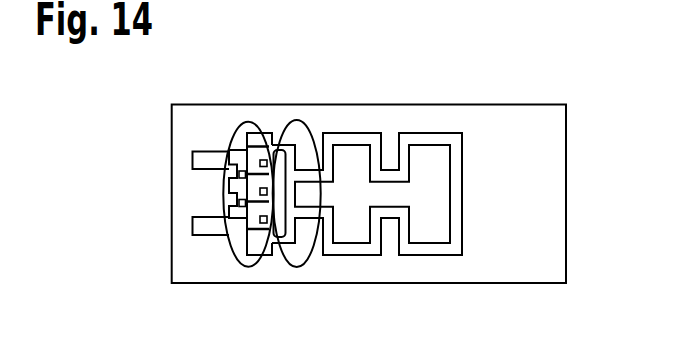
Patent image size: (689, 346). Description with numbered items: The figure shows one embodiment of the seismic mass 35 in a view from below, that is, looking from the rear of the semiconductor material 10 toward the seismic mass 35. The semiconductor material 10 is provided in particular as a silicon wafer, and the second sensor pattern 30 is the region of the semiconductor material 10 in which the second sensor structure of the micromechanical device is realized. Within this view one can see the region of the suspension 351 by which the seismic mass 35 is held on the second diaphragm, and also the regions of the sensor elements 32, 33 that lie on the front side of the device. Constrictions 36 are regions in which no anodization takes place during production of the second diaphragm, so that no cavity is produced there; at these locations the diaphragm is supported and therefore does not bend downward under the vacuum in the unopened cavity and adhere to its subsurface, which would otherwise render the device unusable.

The semiconductor material 10 is at (518, 127).
The second sensor pattern 30 is at (462, 58).
The sensor element 32 is at (300, 123).
The sensor element 33 is at (248, 124).
The seismic mass 35 is at (425, 163).
The constrictions 36 is at (390, 236).
The suspension 351 is at (270, 238).